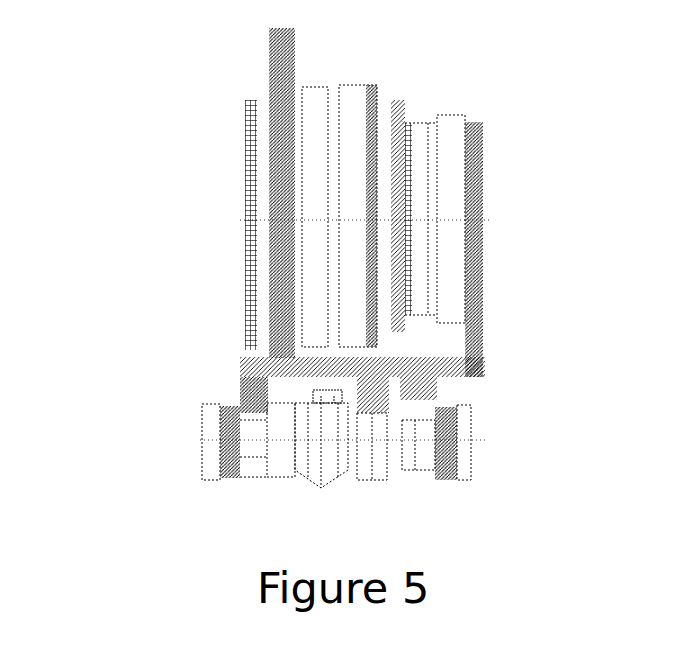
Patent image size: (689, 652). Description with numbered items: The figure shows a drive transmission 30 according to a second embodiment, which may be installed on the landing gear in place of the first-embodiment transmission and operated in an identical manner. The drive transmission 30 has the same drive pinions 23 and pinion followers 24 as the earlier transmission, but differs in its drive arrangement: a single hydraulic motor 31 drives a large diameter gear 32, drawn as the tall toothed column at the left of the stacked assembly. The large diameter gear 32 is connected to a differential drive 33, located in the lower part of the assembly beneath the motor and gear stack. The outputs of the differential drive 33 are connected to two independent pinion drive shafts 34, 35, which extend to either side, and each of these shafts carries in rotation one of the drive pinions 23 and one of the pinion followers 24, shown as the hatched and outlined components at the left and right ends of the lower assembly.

The drive transmission 30 is at (340, 308).
The hydraulic motor 31 is at (440, 240).
The large diameter gear 32 is at (280, 240).
The drive pinion 23 is at (225, 467).
The pinion follower 24 is at (207, 440).
The differential drive 33 is at (328, 462).
The pinion drive shaft 34 is at (273, 440).
The pinion drive shaft 35 is at (395, 440).